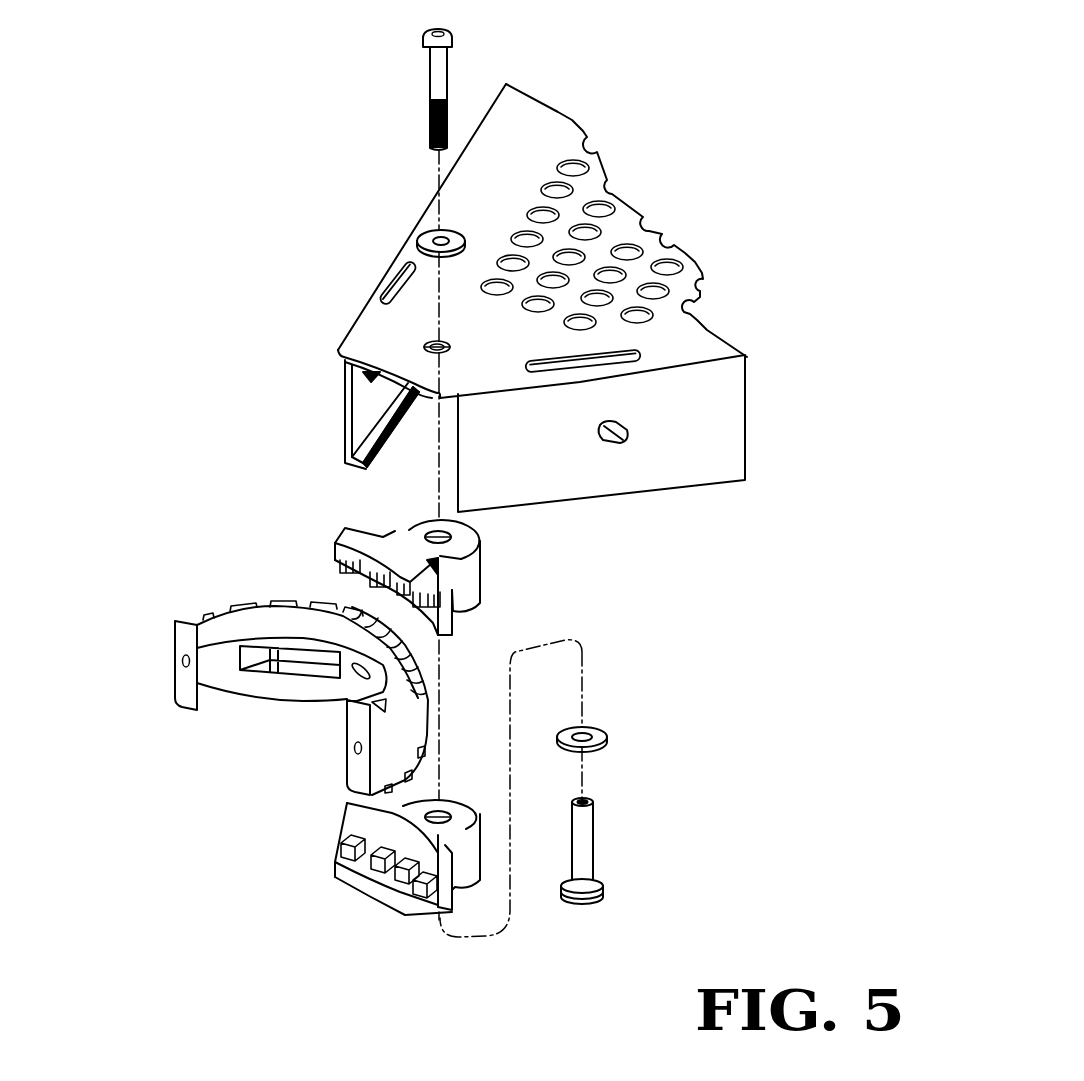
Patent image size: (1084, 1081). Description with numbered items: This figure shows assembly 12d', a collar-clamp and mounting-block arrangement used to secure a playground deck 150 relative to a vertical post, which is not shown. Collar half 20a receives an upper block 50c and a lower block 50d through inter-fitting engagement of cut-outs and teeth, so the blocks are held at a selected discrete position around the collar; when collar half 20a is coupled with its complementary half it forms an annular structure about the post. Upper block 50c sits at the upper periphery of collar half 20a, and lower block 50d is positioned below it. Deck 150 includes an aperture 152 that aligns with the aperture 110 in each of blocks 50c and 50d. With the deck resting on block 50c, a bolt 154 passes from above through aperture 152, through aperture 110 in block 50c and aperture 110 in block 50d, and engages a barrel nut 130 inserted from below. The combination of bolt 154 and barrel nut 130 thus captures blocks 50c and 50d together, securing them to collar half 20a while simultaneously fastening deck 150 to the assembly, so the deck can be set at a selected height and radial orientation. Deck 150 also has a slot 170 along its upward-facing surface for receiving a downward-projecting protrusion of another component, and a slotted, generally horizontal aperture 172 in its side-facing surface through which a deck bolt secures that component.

The bolt 154 is at (440, 65).
The slot 170 is at (384, 298).
The aperture 152 is at (415, 381).
The deck 150 is at (688, 438).
The aperture 172 is at (601, 444).
The aperture 110 is at (427, 559).
The upper block 50c is at (463, 593).
The lower block 50d is at (468, 862).
The barrel nut 130 is at (583, 843).
The collar half 20a is at (232, 703).
The assembly 12d' is at (853, 716).